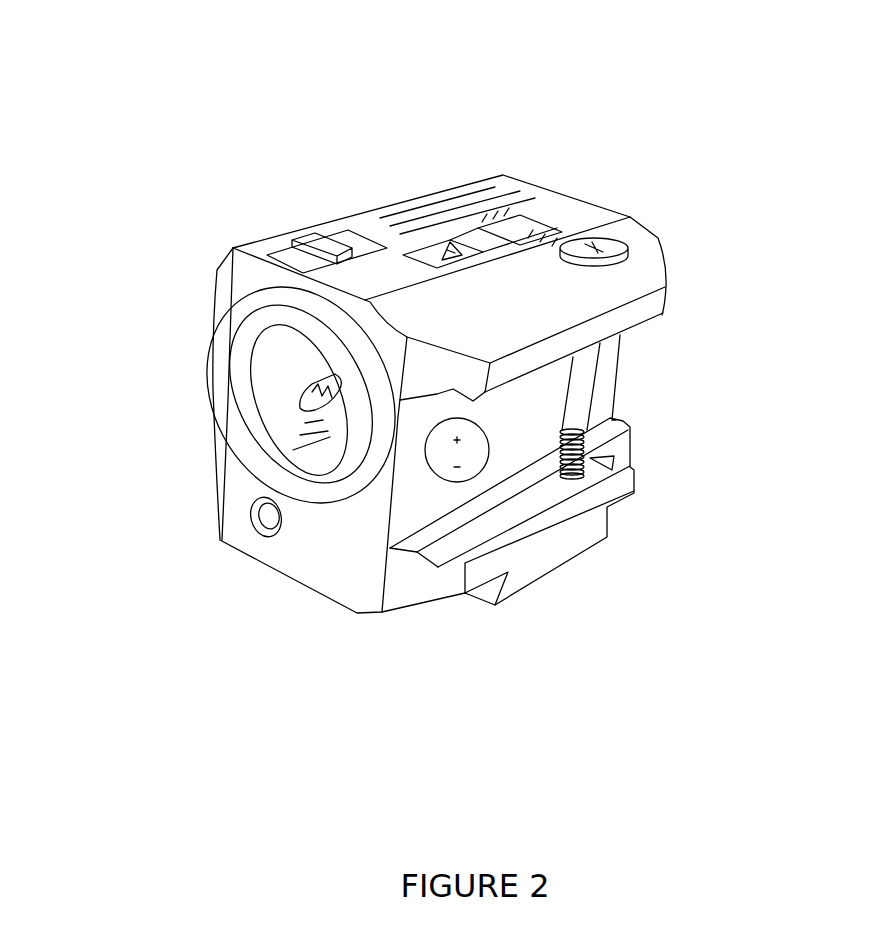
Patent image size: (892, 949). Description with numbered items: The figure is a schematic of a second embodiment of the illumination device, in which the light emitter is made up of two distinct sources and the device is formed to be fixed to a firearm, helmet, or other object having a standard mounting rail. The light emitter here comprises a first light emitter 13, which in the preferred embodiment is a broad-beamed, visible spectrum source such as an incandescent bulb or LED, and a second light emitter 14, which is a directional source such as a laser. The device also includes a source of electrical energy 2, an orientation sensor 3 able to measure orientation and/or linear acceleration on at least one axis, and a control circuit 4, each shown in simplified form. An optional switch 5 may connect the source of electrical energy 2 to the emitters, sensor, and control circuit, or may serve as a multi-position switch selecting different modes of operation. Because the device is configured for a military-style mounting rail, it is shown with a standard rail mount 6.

The source of electrical energy 2 is at (459, 486).
The orientation sensor 3 is at (428, 238).
The control circuit 4 is at (546, 210).
The switch 5 is at (300, 222).
The standard rail mount 6 is at (636, 384).
The first light emitter 13 is at (290, 379).
The second light emitter 14 is at (248, 524).